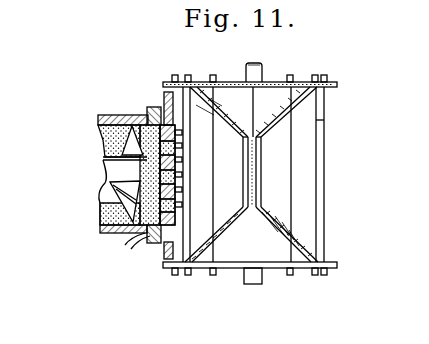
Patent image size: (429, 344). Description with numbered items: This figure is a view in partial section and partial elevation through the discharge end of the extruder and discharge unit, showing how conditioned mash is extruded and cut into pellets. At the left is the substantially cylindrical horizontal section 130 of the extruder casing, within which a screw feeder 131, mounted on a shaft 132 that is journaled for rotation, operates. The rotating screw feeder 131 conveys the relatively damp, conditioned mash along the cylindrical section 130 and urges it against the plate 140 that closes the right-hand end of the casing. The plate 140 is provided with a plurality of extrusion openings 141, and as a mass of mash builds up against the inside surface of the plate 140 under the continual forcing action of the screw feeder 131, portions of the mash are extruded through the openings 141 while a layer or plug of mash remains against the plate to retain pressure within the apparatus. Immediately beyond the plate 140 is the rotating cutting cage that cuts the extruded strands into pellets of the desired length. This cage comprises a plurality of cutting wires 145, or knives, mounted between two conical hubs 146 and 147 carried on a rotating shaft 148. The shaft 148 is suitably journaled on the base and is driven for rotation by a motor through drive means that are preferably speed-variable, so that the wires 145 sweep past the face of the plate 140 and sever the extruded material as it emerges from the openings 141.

The cylindrical horizontal section 130 is at (112, 117).
The screw feeder 131 is at (128, 202).
The shaft 132 is at (112, 163).
The plate 140 is at (168, 108).
The extrusion openings 141 is at (128, 242).
The cutting wires 145 is at (324, 121).
The conical hub 146 is at (235, 243).
The conical hub 147 is at (272, 128).
The rotating shaft 148 is at (263, 73).